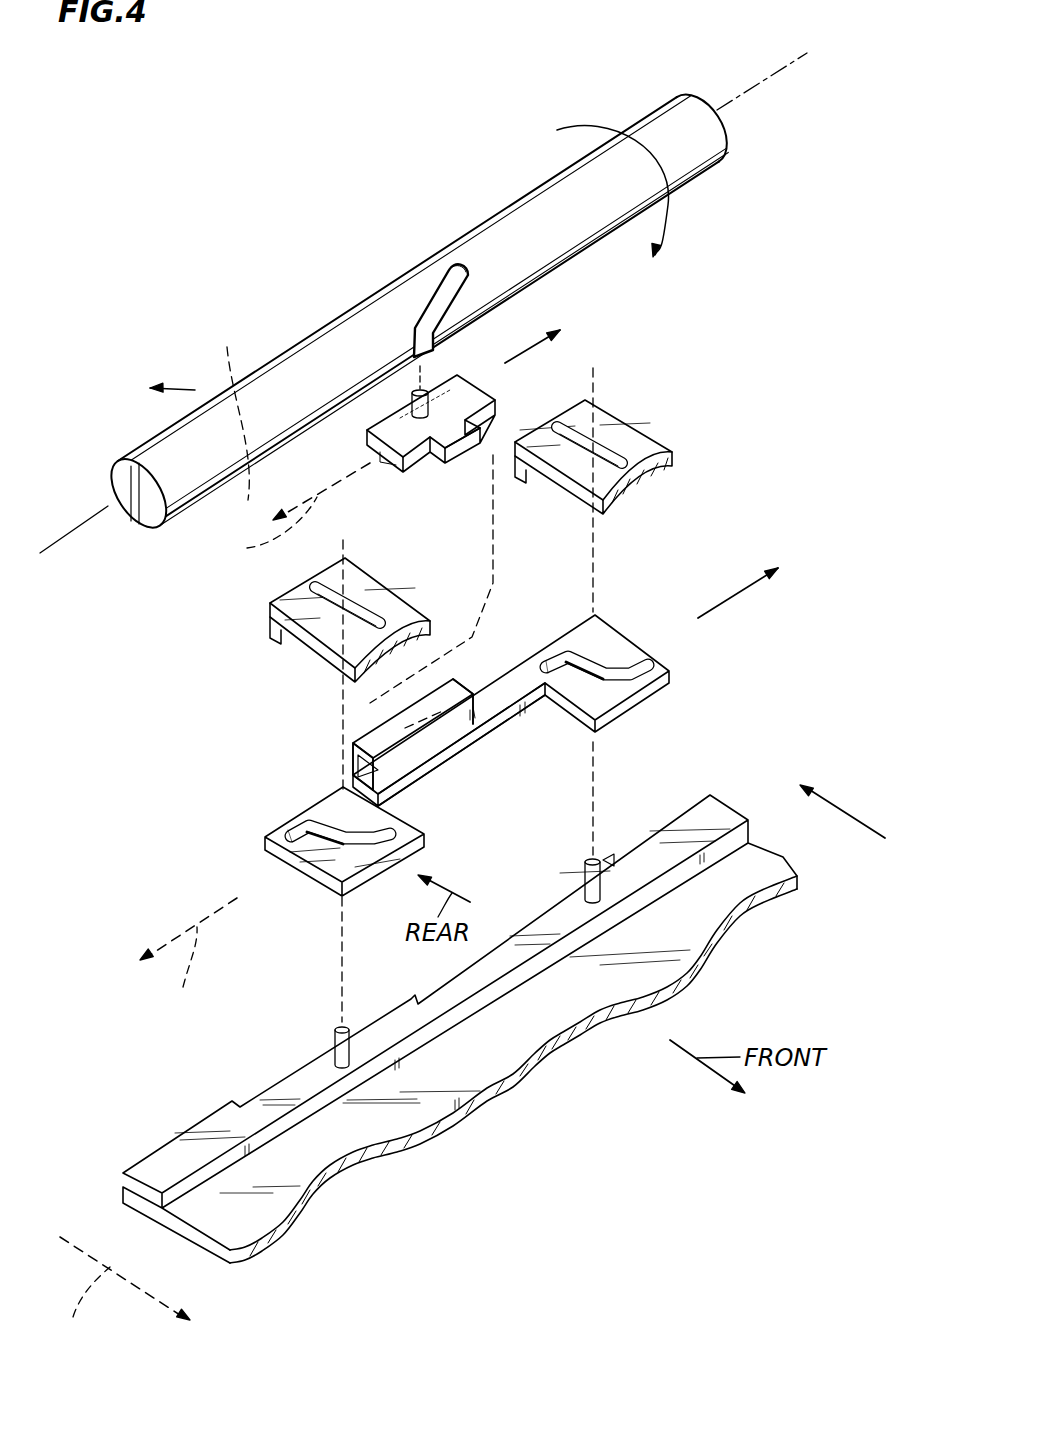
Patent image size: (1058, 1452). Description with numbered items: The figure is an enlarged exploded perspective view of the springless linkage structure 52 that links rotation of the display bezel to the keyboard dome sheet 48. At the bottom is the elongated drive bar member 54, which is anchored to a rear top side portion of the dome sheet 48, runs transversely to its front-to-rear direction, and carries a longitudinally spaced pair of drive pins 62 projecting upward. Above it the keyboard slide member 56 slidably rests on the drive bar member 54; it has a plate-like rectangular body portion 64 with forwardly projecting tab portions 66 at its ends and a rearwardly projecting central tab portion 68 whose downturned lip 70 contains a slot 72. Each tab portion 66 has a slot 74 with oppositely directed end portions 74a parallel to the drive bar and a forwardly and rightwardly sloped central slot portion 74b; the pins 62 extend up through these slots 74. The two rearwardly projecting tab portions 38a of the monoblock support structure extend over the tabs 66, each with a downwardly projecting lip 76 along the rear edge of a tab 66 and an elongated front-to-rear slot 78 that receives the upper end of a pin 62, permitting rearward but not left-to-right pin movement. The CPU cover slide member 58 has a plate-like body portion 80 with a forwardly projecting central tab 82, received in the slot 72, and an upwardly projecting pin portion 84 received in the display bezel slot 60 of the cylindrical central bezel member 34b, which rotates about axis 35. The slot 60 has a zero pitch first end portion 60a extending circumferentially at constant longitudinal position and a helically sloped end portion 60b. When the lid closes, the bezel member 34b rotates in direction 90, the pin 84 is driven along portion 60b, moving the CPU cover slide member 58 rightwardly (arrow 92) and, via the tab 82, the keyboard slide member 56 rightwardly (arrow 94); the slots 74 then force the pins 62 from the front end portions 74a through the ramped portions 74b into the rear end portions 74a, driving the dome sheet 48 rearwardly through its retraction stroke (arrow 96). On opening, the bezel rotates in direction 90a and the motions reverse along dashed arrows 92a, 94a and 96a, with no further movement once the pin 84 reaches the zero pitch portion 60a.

The cylindrical central bezel member 34b is at (279, 361).
The axis of rotation 35 is at (772, 78).
The dome sheet 48 is at (400, 1140).
The springless linkage structure 52 is at (158, 758).
The drive bar member 54 is at (460, 1002).
The keyboard slide member 56 is at (470, 711).
The CPU cover slide member 58 is at (459, 432).
The display bezel slot 60 is at (429, 259).
The first end portion of bezel slot 60a is at (413, 343).
The helically sloped end portion of bezel slot 60b is at (462, 266).
The drive pins 62 is at (588, 869).
The body portion of keyboard slide member 64 is at (500, 722).
The forwardly projecting tab portions 66 is at (471, 763).
The rearwardly projecting central tab portion 68 is at (465, 682).
The downturned lip 70 is at (352, 763).
The slot in downturned lip 72 is at (437, 768).
The slot in forwardly projecting tab 74 is at (465, 747).
The oppositely directed end portions of slot 74a is at (288, 826).
The central slot portion 74b is at (347, 861).
The downwardly projecting lip 76 is at (527, 478).
The elongated slot in monoblock tab 78 is at (679, 455).
The body portion of CPU cover slide member 80 is at (474, 393).
The central tab of CPU cover slide member 82 is at (440, 456).
The pin portion 84 is at (432, 390).
The rearwardly projecting tab portions of monoblock support structure 38a is at (476, 546).
The bezel rotation direction (closing) 90 is at (660, 153).
The bezel rotation direction (opening) 90a is at (199, 411).
The CPU cover slide member drive direction (closing) 92 is at (570, 353).
The CPU cover slide member drive direction (opening) 92a is at (284, 512).
The keyboard slide member drive direction (closing) 94 is at (732, 600).
The keyboard slide member drive direction (opening) 94a is at (187, 953).
The dome sheet retraction stroke direction 96 is at (848, 812).
The dome sheet elevation stroke direction 96a is at (116, 1292).